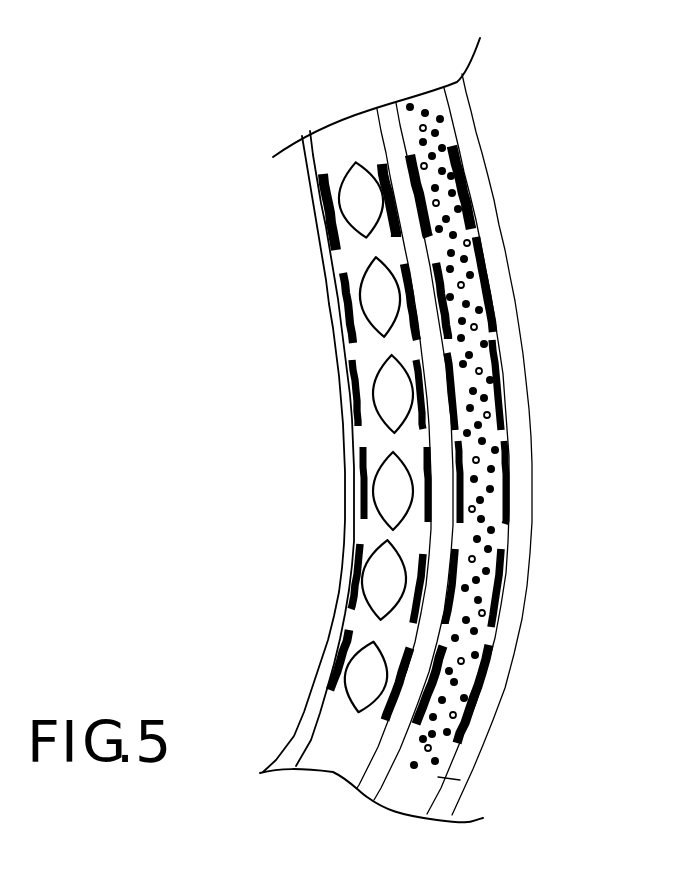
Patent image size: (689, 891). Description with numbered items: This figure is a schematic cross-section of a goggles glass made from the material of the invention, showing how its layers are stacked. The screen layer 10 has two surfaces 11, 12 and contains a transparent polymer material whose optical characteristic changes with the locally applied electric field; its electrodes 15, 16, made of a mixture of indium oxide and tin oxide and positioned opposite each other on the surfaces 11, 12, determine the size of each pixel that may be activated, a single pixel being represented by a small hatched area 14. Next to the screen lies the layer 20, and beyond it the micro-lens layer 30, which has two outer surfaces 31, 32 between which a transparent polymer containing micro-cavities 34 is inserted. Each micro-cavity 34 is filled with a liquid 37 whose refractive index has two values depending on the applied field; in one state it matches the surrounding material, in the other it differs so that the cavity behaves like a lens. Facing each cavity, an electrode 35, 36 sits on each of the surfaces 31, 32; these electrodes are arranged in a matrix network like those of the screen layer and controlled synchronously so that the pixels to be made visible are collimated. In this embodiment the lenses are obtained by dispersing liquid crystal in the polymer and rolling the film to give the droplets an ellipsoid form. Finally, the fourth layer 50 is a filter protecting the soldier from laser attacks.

The screen layer 10 is at (427, 102).
The surface 11 is at (460, 780).
The surface 12 is at (388, 766).
The hatched area 14 is at (470, 183).
The transparent electrode 15 is at (505, 497).
The transparent electrode 16 is at (451, 483).
The layer 20 is at (385, 125).
The micro-lens layer 30 is at (338, 133).
The surface 31 is at (428, 348).
The surface 32 is at (360, 442).
The micro-cavity 34 is at (367, 302).
The electrode 35 is at (441, 494).
The electrode 36 is at (355, 484).
The liquid 37 is at (378, 587).
The fourth layer 50 is at (490, 713).